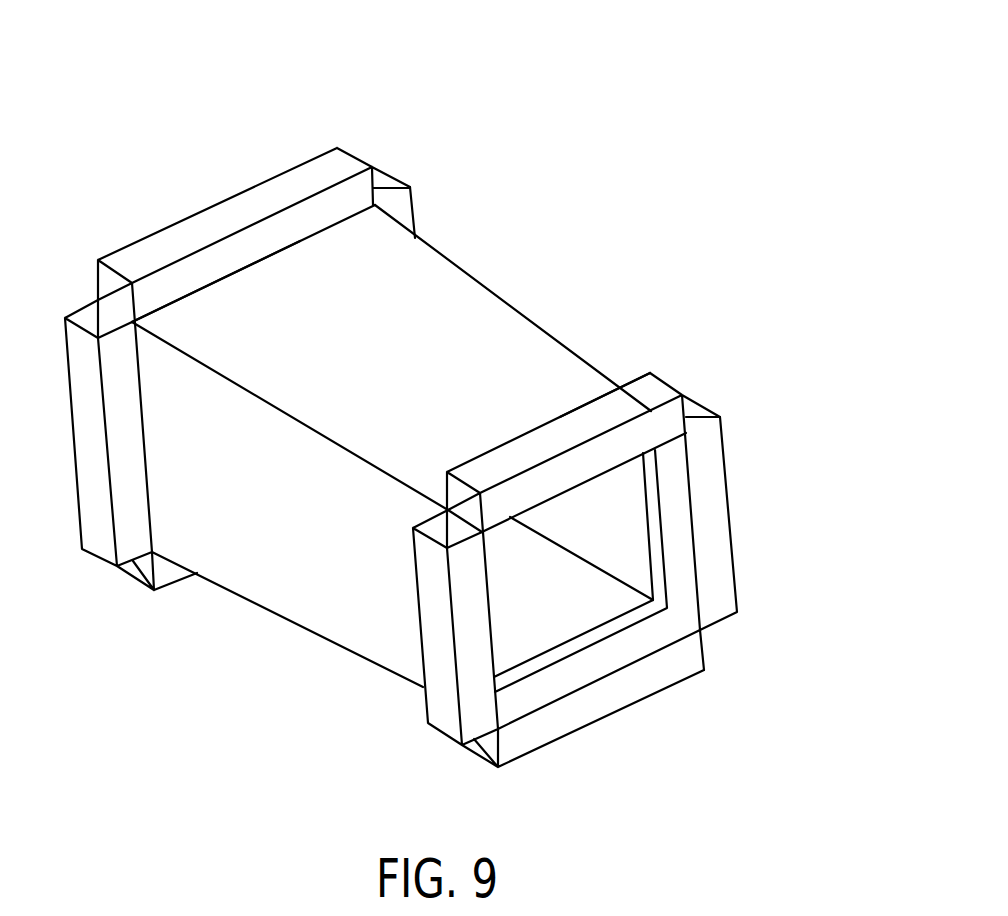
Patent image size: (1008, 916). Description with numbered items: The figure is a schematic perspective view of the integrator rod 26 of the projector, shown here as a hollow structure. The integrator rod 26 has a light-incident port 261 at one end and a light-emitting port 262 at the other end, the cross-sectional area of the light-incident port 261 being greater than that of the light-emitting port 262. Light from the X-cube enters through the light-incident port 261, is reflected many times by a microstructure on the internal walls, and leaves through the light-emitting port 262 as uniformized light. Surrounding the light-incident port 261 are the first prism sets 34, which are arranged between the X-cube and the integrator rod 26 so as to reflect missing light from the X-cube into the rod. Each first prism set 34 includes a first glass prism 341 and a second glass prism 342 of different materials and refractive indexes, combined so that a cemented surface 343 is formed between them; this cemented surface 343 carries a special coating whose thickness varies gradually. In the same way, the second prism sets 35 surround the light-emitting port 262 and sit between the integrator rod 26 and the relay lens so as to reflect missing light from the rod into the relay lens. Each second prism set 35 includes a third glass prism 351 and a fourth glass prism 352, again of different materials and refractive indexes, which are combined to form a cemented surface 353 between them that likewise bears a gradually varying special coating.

The integrator rod 26 is at (426, 410).
The light-incident port 261 is at (356, 235).
The light-emitting port 262 is at (603, 387).
The first prism set 34 is at (324, 300).
The first glass prism 341 is at (382, 191).
The second glass prism 342 is at (388, 178).
The cemented surface 343 is at (420, 184).
The second prism set 35 is at (654, 517).
The third glass prism 351 is at (695, 422).
The fourth glass prism 352 is at (692, 408).
The cemented surface 353 is at (713, 408).